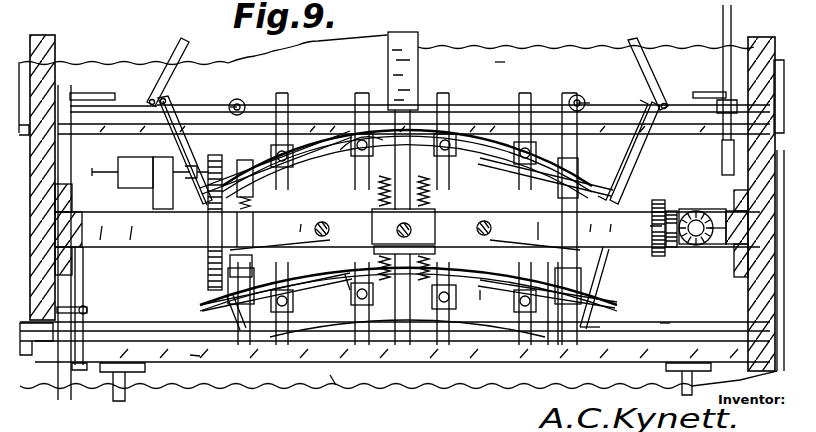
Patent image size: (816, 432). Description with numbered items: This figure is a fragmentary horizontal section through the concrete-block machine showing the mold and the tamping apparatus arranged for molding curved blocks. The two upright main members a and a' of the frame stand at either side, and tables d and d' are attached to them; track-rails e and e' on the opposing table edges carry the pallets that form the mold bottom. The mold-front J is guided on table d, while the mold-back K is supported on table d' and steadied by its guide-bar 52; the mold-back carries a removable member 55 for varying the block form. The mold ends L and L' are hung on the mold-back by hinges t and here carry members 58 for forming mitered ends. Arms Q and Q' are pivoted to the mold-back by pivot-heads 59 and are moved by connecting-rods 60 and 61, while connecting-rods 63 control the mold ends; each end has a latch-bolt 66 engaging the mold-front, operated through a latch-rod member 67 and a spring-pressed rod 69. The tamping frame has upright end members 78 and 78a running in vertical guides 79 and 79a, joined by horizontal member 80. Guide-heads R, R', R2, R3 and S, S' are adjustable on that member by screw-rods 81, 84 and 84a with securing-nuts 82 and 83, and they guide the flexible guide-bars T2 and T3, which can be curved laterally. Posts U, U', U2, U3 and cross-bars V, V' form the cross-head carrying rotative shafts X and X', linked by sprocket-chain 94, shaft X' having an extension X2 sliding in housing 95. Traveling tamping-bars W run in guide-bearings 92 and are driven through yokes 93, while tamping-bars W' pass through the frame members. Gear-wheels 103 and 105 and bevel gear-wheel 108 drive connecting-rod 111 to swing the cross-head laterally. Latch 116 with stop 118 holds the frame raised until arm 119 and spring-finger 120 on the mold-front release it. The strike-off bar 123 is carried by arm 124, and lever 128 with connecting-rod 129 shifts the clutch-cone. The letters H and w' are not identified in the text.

The upright main member a is at (42, 162).
The upright main member a' is at (766, 185).
The guide-bar 52 is at (412, 82).
The removable member 55 is at (499, 130).
The removable member 58 is at (283, 310).
The pivot-head 59 is at (245, 104).
The connecting-rod 60 is at (178, 46).
The connecting-rod 61 is at (640, 48).
The connecting-rod 63 is at (180, 152).
The latch-bolt 66 is at (612, 312).
The latch-rod member 67 is at (648, 200).
The rod 69 is at (598, 270).
The upright end member 78 is at (83, 235).
The upright end member 78a is at (732, 250).
The vertical guide 79 is at (72, 200).
The vertical guide 79a is at (738, 272).
The horizontal member 80 is at (230, 268).
The screw-rod 81 is at (228, 278).
The securing-nut 82 is at (478, 234).
The securing-nut 83 is at (232, 226).
The screw-rod 84 is at (333, 182).
The screw-rod 84a is at (520, 174).
The guide-bearing 92 is at (520, 154).
The yoke 93 is at (444, 110).
The sprocket-chain 94 is at (173, 326).
The housing 95 is at (132, 168).
The connecting gear-wheel 103 is at (673, 207).
The gear-wheel 105 is at (670, 280).
The connecting bevel gear-wheel 108 is at (697, 247).
The connecting-rod 111 is at (696, 210).
The latch 116 is at (81, 266).
The stop 118 is at (84, 330).
The arm 119 is at (80, 368).
The spring-finger 120 is at (77, 346).
The bar 123 is at (93, 92).
The arm 124 is at (67, 110).
The lever 128 is at (722, 146).
The connecting-rod 129 is at (723, 25).
The mold-back K is at (323, 120).
The arm Q is at (185, 144).
The arm Q' is at (629, 133).
The hinge t is at (245, 102).
The guide-bar T2 is at (345, 282).
The guide-bar T3 is at (336, 145).
The guide-head S is at (408, 292).
The guide-head S' is at (362, 107).
The post U is at (303, 296).
The post U' is at (512, 297).
The post U2 is at (292, 187).
The post U3 is at (572, 104).
The cross-bar V is at (329, 233).
The cross-bar V' is at (544, 233).
The traveling tamping-bar W is at (407, 161).
The tamping-bar W' is at (435, 224).
The rotative shaft X is at (288, 308).
The rotative shaft X' is at (389, 228).
The extension shaft X2 is at (150, 183).
The guide-head R is at (233, 341).
The guide-head R' is at (571, 289).
The guide-head R2 is at (280, 233).
The guide-head R3 is at (535, 233).
The mold end L is at (276, 339).
The mold end L' is at (532, 338).
The mold-front J is at (197, 351).
The block H is at (482, 315).
The table d is at (335, 396).
The table d' is at (510, 41).
The track-rail e is at (395, 316).
The track-rail e' is at (96, 158).
The arch w' is at (407, 367).